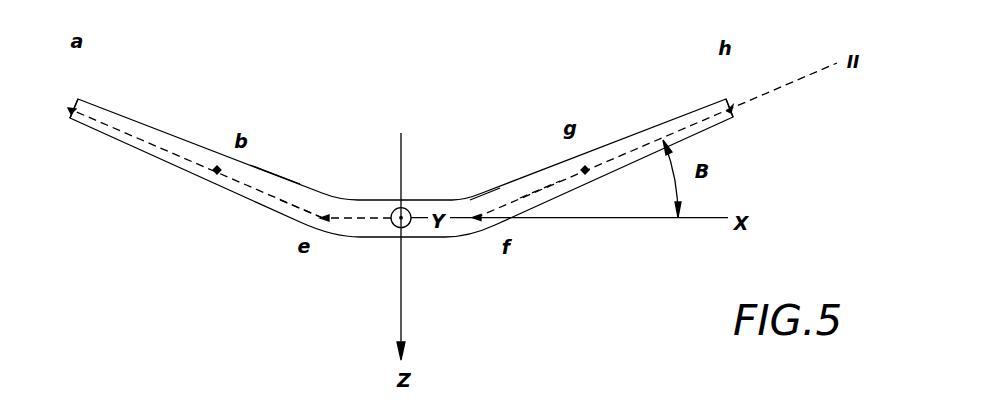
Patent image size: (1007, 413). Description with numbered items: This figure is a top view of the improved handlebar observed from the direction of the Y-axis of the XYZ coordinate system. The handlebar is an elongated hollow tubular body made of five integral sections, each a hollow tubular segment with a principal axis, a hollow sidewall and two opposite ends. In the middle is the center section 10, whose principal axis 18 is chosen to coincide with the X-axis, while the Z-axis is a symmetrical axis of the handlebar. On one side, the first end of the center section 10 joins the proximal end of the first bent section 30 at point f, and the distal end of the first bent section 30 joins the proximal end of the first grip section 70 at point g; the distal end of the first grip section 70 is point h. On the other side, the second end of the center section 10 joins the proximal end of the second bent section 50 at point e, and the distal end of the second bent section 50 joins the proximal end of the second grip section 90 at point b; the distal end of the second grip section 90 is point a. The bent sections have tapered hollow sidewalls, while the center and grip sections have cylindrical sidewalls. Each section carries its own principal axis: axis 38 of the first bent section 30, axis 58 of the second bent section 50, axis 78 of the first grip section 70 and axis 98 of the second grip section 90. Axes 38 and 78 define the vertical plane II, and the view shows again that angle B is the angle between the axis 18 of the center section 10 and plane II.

The center section 10 is at (456, 241).
The principal axis of the center section 18 is at (372, 218).
The first bent section 30 is at (493, 178).
The principal axis of the first bent section 38 is at (543, 187).
The second bent section 50 is at (266, 165).
The principal axis of the second bent section 58 is at (292, 203).
The first grip section 70 is at (675, 108).
The principal axis of the first grip section 78 is at (607, 162).
The second grip section 90 is at (110, 104).
The principal axis of the second grip section 98 is at (162, 147).